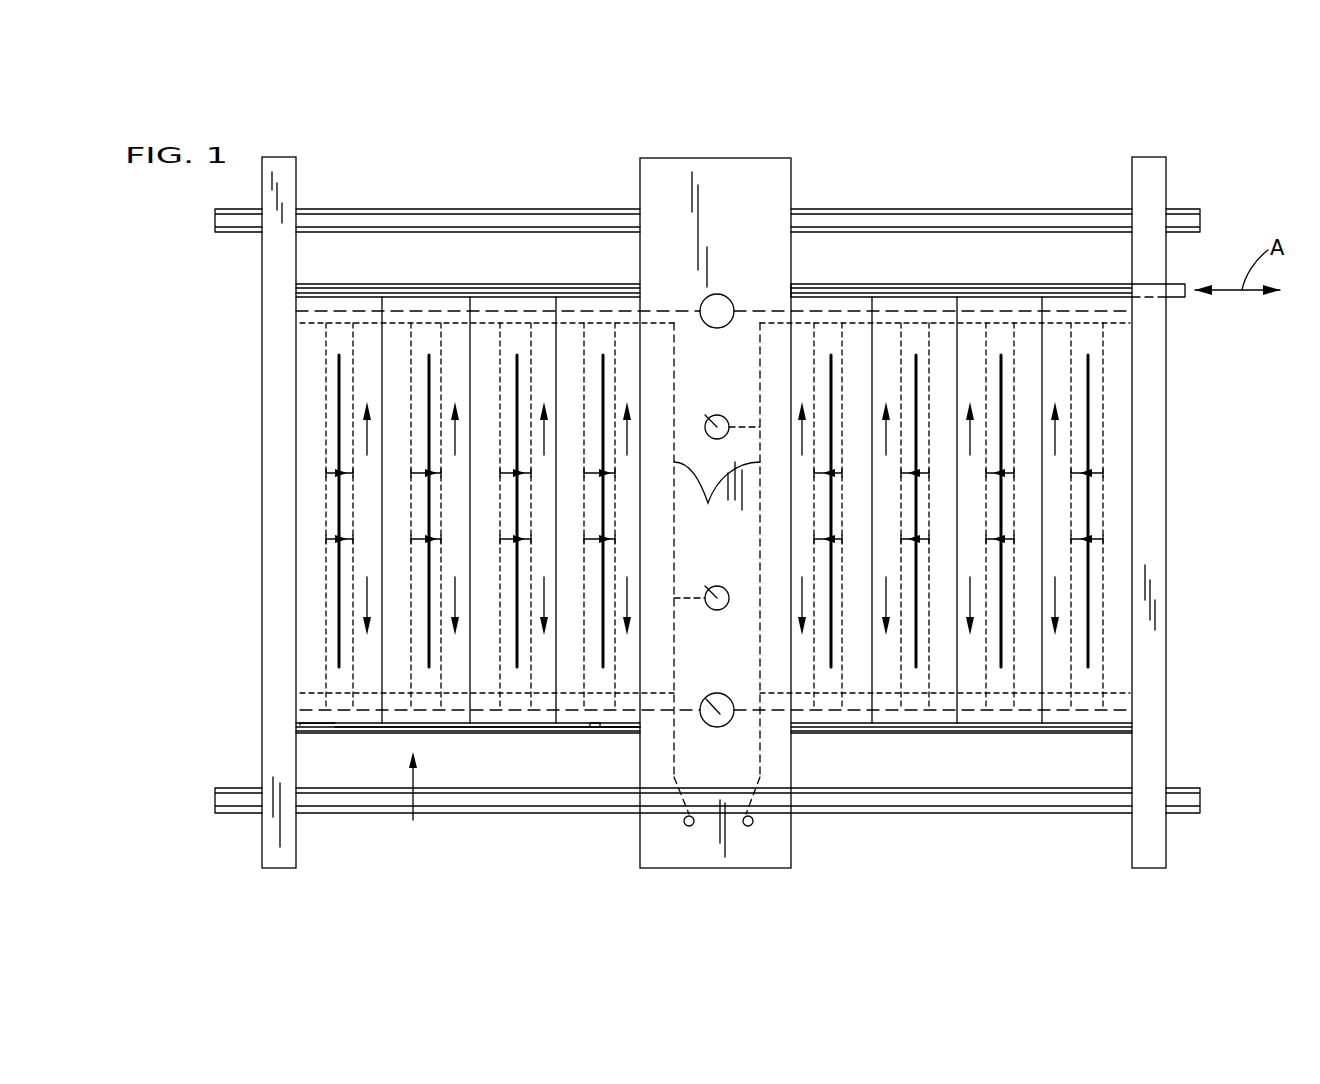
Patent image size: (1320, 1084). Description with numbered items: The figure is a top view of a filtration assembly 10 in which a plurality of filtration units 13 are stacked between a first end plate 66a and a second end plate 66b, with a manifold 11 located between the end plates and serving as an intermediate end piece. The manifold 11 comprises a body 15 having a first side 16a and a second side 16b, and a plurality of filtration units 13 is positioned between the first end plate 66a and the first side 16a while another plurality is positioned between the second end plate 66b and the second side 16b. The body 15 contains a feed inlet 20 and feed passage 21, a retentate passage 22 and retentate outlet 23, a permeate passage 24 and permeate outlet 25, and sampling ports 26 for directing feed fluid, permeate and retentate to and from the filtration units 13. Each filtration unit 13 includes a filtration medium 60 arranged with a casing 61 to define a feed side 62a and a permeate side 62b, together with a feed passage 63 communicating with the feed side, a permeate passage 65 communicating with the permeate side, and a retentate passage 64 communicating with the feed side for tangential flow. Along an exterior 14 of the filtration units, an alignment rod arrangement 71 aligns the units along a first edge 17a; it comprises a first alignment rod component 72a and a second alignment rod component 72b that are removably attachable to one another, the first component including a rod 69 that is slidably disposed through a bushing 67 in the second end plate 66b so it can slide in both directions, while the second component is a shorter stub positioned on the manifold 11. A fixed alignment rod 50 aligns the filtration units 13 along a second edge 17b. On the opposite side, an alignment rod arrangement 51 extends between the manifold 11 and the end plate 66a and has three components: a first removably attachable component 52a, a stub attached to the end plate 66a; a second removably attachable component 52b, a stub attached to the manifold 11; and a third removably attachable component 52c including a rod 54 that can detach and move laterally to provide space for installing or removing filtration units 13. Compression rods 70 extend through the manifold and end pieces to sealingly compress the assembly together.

The filtration assembly 10 is at (438, 147).
The manifold 11 is at (655, 153).
The filtration unit 13 is at (315, 401).
The exterior 14 is at (320, 300).
The body 15 is at (720, 172).
The first side 16a is at (640, 190).
The second side 16b is at (793, 250).
The first edge 17a is at (1100, 297).
The second edge 17b is at (430, 295).
The feed inlet 20 is at (720, 295).
The feed passage 21 is at (673, 308).
The retentate passage 22 is at (655, 712).
The retentate outlet 23 is at (710, 700).
The permeate passage 24 is at (717, 496).
The permeate outlet 25 is at (710, 418).
The sampling port 26 is at (752, 823).
The fixed alignment rod 50 is at (328, 293).
The alignment rod arrangement 51 is at (420, 803).
The first removably attachable component 52a is at (307, 728).
The second removably attachable component 52b is at (620, 727).
The third removably attachable component 52c is at (568, 727).
The rod 54 is at (493, 727).
The filtration medium 60 is at (430, 635).
The casing 61 is at (395, 472).
The feed side 62a is at (1110, 680).
The permeate side 62b is at (1072, 680).
The feed passage 63 is at (515, 312).
The retentate passage 64 is at (345, 706).
The permeate passage 65 is at (393, 295).
The first end plate 66a is at (278, 530).
The second end plate 66b is at (1150, 483).
The bushing 67 is at (1145, 298).
The rod 69 is at (900, 287).
The compression rod 70 is at (920, 805).
The alignment rod arrangement 71 is at (982, 283).
The first alignment rod component 72a is at (873, 287).
The second alignment rod component 72b is at (843, 290).